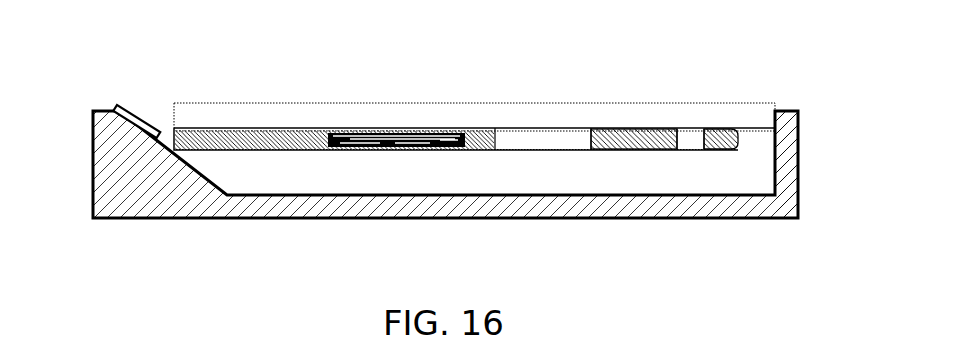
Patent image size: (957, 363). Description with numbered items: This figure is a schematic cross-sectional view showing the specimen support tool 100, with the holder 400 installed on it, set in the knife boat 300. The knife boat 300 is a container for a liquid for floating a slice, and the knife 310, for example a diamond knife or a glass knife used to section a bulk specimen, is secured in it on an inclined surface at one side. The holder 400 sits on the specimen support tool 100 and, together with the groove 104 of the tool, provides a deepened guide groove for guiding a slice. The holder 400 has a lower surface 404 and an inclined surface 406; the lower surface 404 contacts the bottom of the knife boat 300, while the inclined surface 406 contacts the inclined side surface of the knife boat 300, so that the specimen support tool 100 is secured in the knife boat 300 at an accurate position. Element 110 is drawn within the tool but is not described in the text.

The specimen support tool 100 is at (634, 130).
The groove 104 is at (229, 127).
The semiconductor device 110 is at (402, 128).
The knife boat 300 is at (788, 120).
The knife 310 is at (141, 117).
The holder 400 is at (545, 117).
The lower surface 404 is at (740, 195).
The inclined surface 406 is at (210, 188).